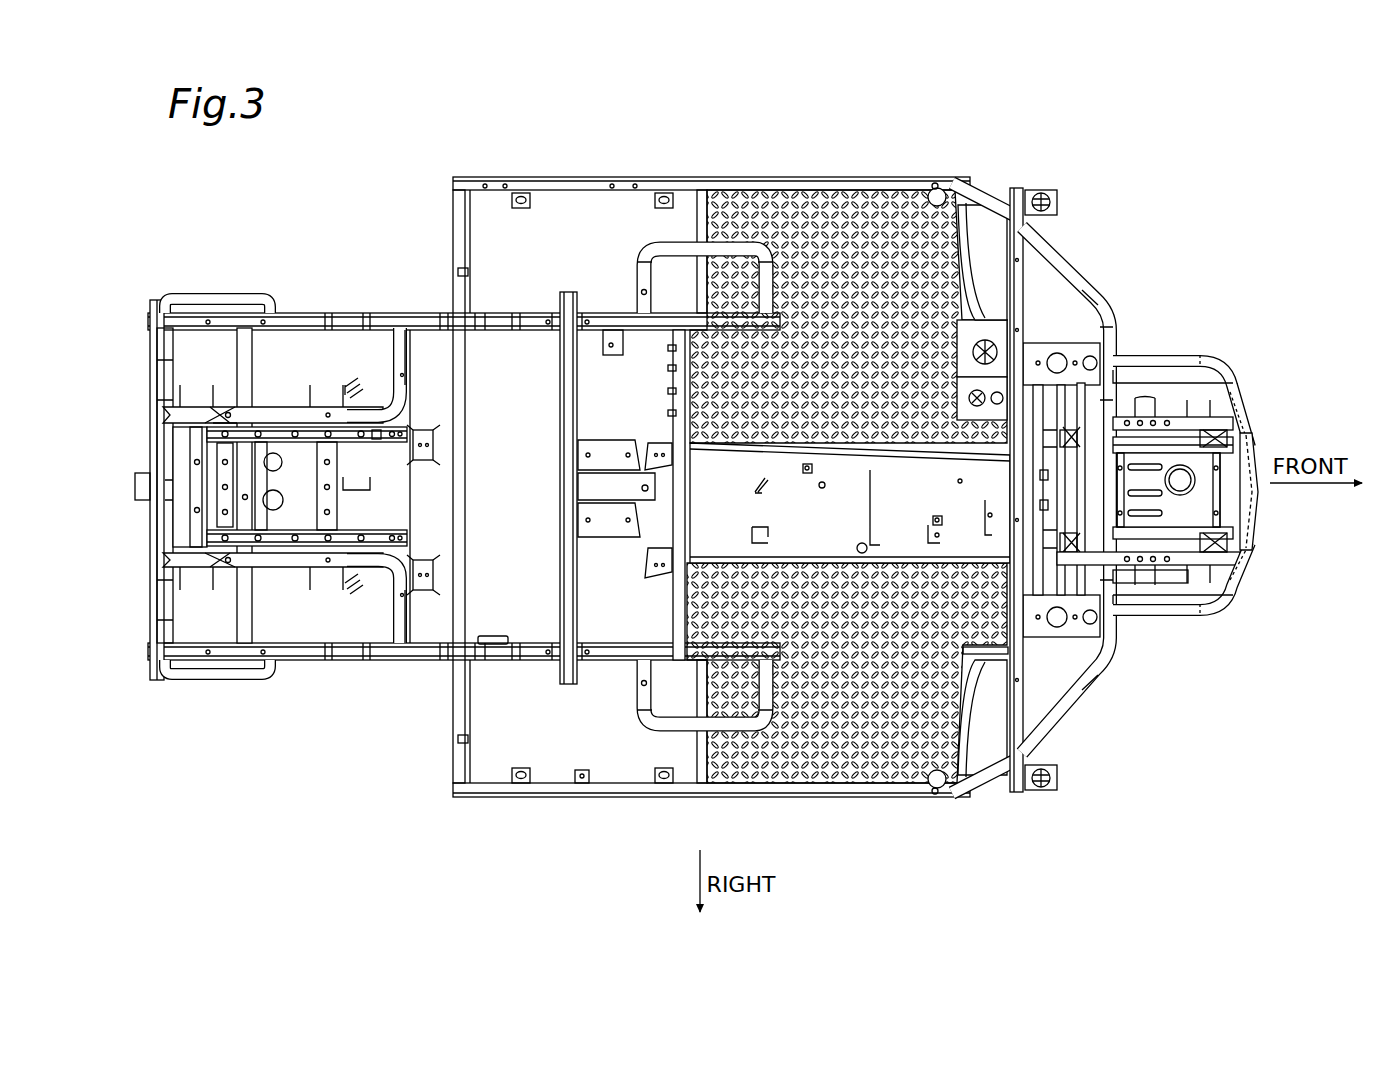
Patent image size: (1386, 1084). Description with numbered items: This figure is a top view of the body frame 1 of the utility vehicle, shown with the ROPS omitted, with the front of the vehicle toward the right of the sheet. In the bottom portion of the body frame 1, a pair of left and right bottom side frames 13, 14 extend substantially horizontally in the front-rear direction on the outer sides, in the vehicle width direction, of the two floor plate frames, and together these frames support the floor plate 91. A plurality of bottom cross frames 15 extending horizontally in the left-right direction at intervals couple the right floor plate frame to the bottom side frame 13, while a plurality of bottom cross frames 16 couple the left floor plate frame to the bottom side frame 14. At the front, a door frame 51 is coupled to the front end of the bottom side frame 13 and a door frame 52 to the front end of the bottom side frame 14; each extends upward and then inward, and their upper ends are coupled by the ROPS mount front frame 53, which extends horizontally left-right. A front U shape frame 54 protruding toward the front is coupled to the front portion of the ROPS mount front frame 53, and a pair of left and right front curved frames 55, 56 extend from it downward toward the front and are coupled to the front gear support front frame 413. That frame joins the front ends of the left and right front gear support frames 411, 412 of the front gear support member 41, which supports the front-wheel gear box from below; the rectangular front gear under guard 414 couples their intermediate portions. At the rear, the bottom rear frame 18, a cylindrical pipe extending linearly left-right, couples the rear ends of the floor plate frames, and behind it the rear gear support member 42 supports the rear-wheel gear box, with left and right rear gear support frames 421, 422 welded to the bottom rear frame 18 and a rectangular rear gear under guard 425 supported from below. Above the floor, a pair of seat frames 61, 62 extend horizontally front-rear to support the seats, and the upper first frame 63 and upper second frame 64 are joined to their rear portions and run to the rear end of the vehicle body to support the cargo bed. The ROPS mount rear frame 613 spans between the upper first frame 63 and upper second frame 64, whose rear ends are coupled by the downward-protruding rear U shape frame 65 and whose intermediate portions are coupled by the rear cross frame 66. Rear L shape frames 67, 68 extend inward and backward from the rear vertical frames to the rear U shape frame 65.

The body frame 1 is at (1133, 212).
The bottom side frame 13 is at (615, 788).
The bottom side frame 14 is at (685, 190).
The bottom cross frame 15 is at (462, 750).
The bottom cross frame 16 is at (463, 210).
The bottom rear frame 18 is at (406, 628).
The front gear support member 41 is at (1245, 410).
The front gear support frame 411 is at (1183, 532).
The front gear support frame 412 is at (1168, 450).
The front gear support front frame 413 is at (1253, 440).
The front gear under guard 414 is at (1157, 505).
The rear gear support member 42 is at (296, 395).
The rear gear support frame 421 is at (318, 538).
The rear gear support frame 422 is at (336, 418).
The rear gear under guard 425 is at (291, 508).
The door frame 51 is at (990, 768).
The door frame 52 is at (986, 192).
The ROPS mount front frame 53 is at (1016, 205).
The front U shape frame 54 is at (1063, 272).
The front curved frame 55 is at (1213, 607).
The front curved frame 56 is at (1200, 372).
The seat frame 61 is at (656, 655).
The seat frame 62 is at (655, 248).
The ROPS mount rear frame 613 is at (567, 295).
The upper first frame 63 is at (540, 668).
The upper second frame 64 is at (528, 317).
The rear U shape frame 65 is at (162, 388).
The rear cross frame 66 is at (243, 350).
The rear L shape frame 67 is at (262, 553).
The rear L shape frame 68 is at (268, 410).
The floor plate 91 is at (862, 757).